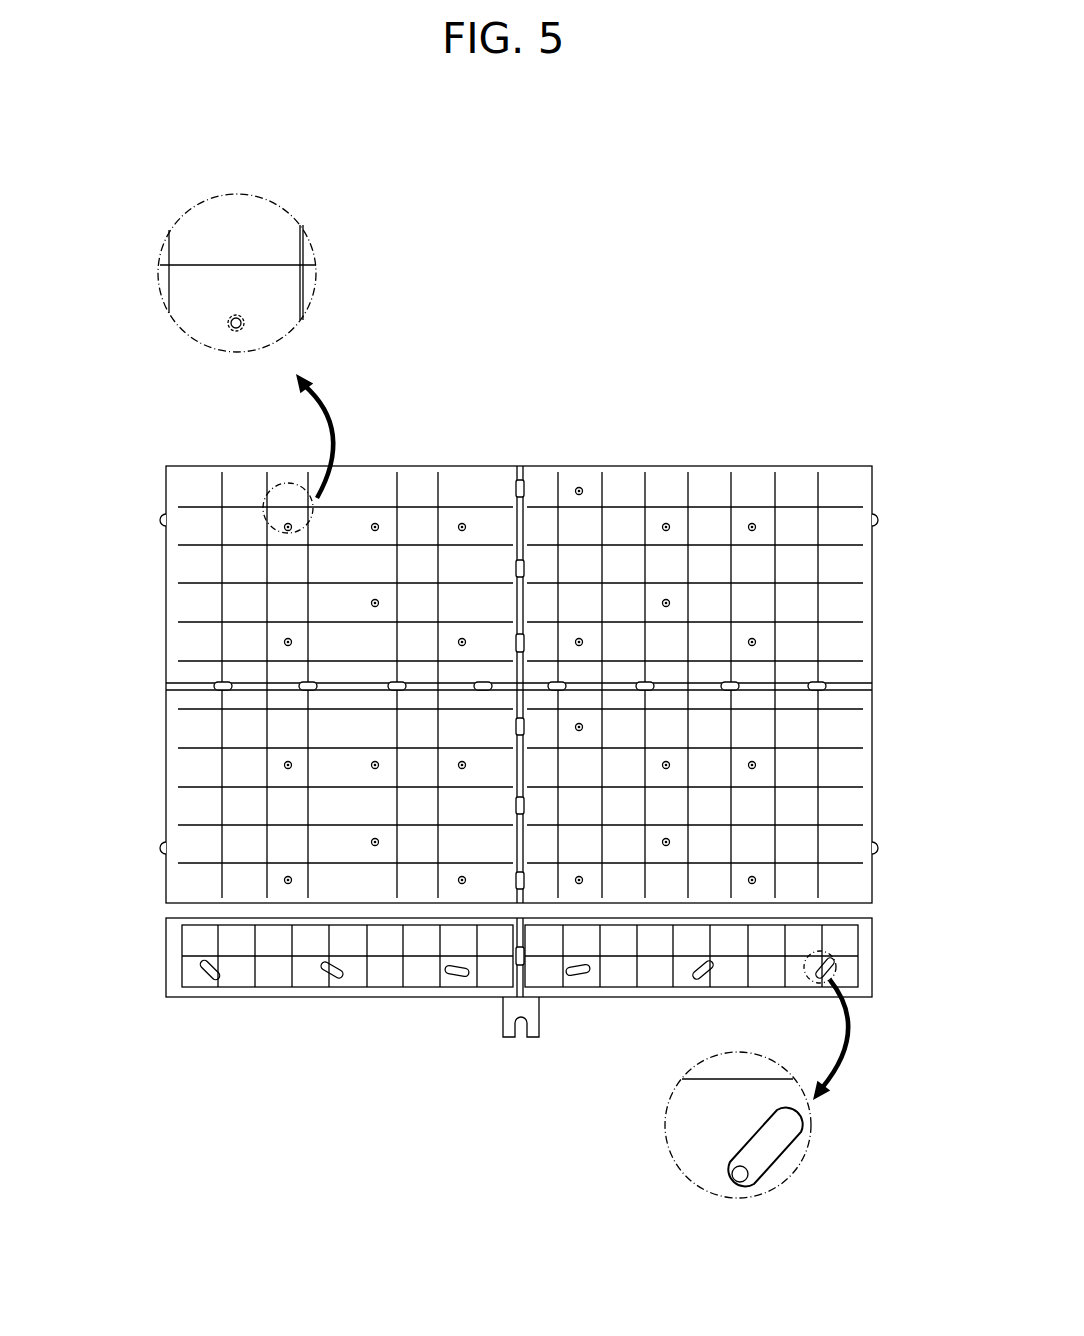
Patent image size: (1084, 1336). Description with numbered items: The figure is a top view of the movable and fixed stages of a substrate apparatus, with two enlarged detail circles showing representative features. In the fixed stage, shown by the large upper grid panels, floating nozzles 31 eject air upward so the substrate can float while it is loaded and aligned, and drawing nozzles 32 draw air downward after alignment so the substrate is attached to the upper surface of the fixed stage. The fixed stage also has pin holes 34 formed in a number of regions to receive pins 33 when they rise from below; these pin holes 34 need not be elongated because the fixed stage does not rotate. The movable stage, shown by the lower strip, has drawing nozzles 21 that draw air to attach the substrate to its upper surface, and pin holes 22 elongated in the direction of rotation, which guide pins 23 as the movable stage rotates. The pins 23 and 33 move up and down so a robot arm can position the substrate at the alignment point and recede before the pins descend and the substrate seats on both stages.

The drawing nozzle 21 is at (741, 1078).
The pin hole 22 is at (793, 1143).
The pin 23 is at (746, 1190).
The floating nozzle 31 is at (162, 265).
The drawing nozzle 32 is at (312, 262).
The pin 33 is at (244, 328).
The pin hole 34 is at (230, 329).